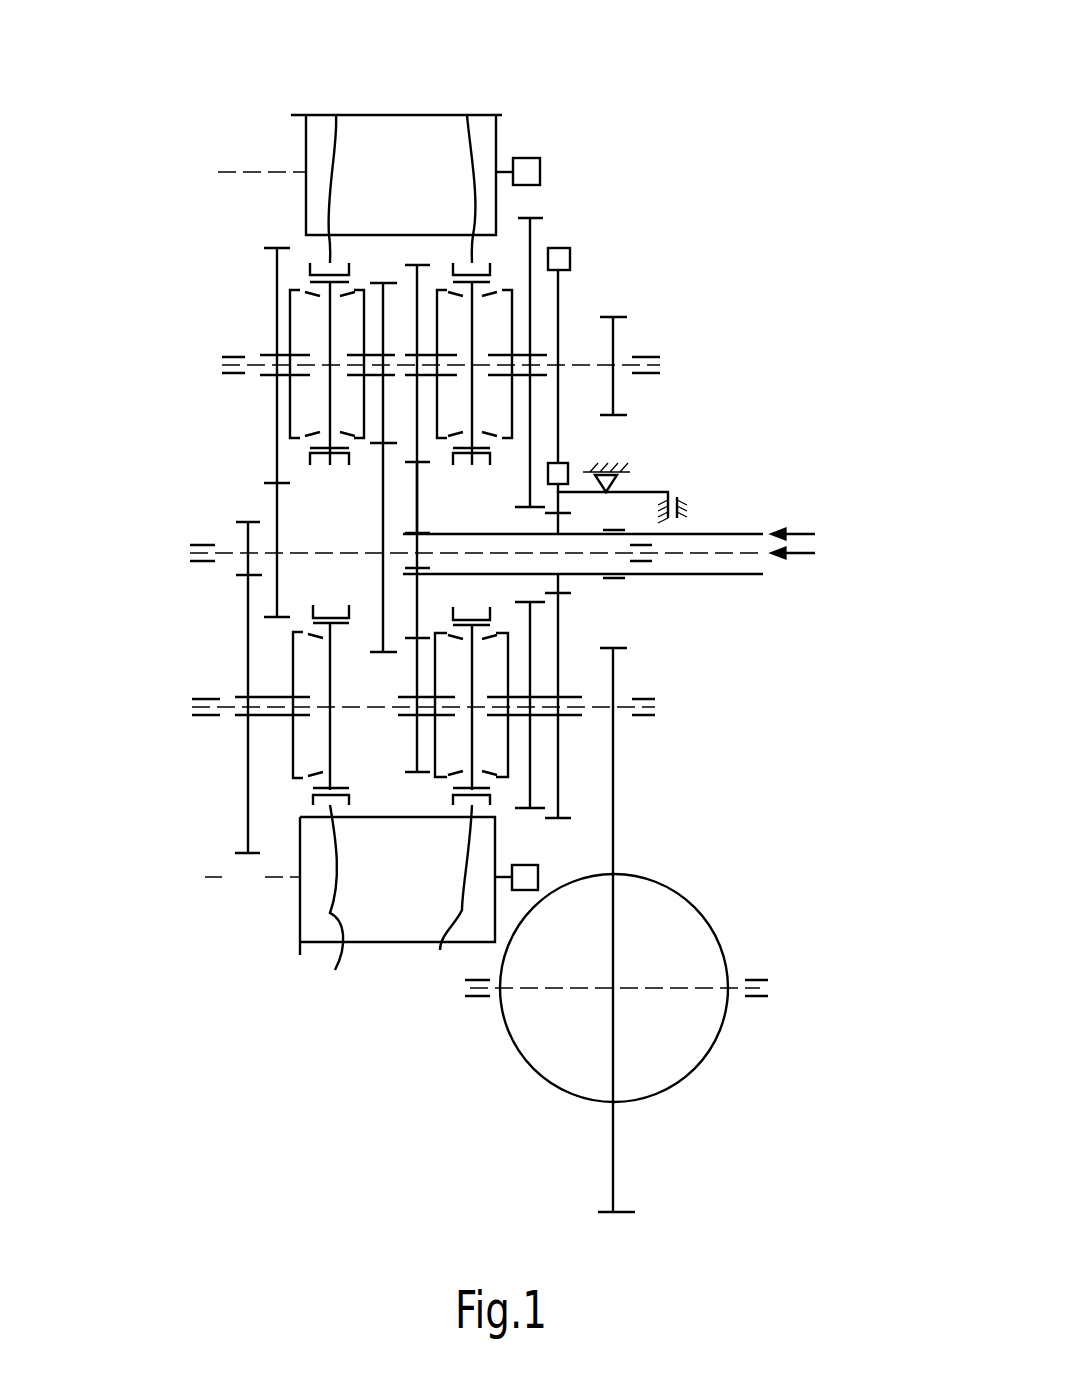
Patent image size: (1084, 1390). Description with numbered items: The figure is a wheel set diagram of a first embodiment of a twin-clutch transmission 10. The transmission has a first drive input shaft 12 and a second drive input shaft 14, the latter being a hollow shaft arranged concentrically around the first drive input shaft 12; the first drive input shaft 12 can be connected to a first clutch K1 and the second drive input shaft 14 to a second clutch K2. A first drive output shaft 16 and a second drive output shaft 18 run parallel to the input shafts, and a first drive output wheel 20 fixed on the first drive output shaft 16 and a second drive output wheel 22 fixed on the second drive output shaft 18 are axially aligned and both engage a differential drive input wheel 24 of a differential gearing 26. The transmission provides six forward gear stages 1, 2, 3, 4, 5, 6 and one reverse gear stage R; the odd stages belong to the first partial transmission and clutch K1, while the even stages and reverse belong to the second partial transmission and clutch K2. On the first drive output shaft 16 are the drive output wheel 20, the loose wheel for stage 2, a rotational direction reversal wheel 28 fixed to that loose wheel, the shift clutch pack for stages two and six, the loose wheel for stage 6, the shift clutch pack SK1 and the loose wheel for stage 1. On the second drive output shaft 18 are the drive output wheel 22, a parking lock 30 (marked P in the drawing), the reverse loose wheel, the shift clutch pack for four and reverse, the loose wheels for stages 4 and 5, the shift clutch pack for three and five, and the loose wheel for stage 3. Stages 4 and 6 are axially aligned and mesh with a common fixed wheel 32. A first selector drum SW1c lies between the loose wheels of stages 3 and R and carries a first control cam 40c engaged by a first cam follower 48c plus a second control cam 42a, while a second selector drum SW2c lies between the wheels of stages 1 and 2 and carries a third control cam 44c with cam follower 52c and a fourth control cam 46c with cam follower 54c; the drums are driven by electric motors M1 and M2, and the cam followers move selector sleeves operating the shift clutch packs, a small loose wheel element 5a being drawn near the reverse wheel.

The twin-clutch transmission 10 is at (775, 286).
The first drive input shaft 12 is at (735, 556).
The second drive input shaft 14 is at (740, 534).
The first drive output shaft 16 is at (617, 705).
The second drive output shaft 18 is at (617, 360).
The first drive output wheel 20 is at (617, 648).
The second drive output wheel 22 is at (617, 316).
The differential drive input wheel 24 is at (617, 1162).
The differential gearing 26 is at (722, 921).
The rotational direction reversal wheel 28 is at (535, 780).
The parking lock 30 is at (571, 258).
The common fixed wheel 32 is at (415, 492).
The first control cam 40c is at (340, 150).
The shift rod 42a is at (472, 145).
The third control cam 44c is at (335, 970).
The fourth control cam 46c is at (440, 950).
The first cam follower 48c is at (330, 258).
The third cam follower 52c is at (330, 805).
The fourth cam follower 54c is at (493, 807).
The first selector drum SW1c is at (405, 160).
The second selector drum SW2c is at (395, 913).
The electric motor M1 is at (531, 158).
The electric motor M2 is at (527, 890).
The first clutch K1 is at (814, 562).
The second clutch K2 is at (814, 528).
The shift clutch pack SK1 is at (333, 605).
The forward gear stage 1 is at (248, 704).
The forward gear stage 2 is at (558, 714).
The forward gear stage 3 is at (277, 416).
The forward gear stage 4 is at (417, 435).
The forward gear stage 5 is at (383, 452).
The actuating rod 5a is at (540, 287).
The forward gear stage 6 is at (417, 722).
The reverse gear stage R is at (521, 354).
The parking lock gear P is at (558, 367).